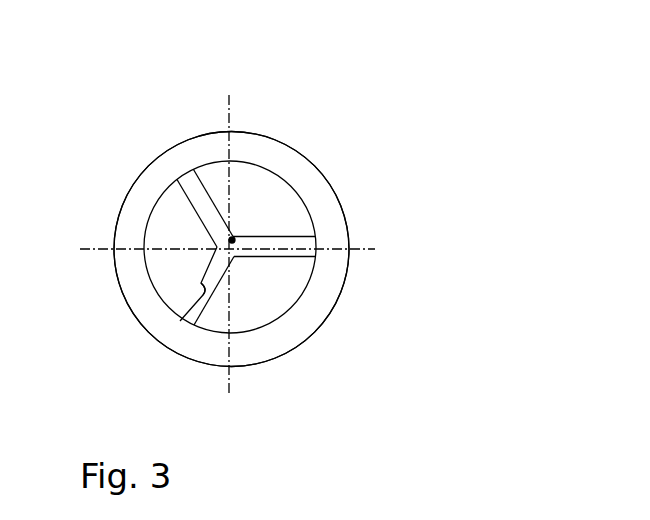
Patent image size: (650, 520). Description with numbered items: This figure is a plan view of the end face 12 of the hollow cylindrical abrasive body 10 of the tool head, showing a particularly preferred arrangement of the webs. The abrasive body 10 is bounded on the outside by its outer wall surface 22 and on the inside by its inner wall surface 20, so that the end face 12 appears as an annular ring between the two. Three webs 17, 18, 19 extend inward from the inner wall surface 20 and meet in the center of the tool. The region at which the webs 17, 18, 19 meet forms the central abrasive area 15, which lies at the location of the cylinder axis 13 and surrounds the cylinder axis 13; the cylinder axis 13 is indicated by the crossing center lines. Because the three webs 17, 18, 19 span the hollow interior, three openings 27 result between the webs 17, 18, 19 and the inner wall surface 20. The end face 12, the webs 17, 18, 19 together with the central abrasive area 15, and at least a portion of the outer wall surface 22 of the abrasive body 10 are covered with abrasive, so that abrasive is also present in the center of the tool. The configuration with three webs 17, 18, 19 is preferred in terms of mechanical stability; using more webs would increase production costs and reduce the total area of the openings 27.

The abrasive body 10 is at (320, 115).
The end face 12 is at (267, 351).
The cylinder axis 13 is at (230, 243).
The central abrasive area 15 is at (233, 238).
The web 17 is at (205, 189).
The web 18 is at (296, 261).
The web 19 is at (191, 294).
The inner wall surface 20 is at (304, 230).
The outer wall surface 22 is at (152, 161).
The openings 27 is at (279, 195).